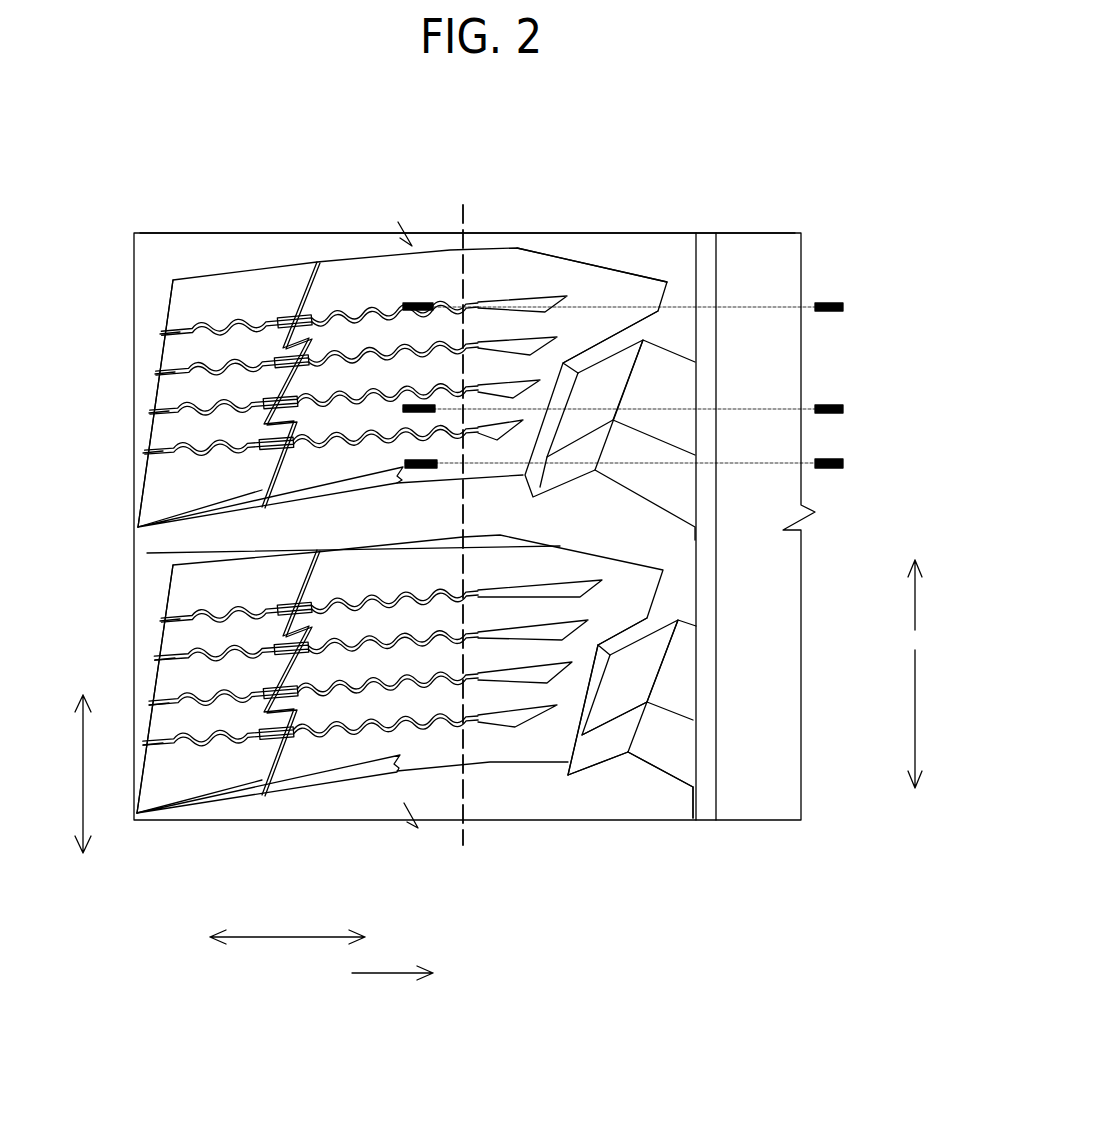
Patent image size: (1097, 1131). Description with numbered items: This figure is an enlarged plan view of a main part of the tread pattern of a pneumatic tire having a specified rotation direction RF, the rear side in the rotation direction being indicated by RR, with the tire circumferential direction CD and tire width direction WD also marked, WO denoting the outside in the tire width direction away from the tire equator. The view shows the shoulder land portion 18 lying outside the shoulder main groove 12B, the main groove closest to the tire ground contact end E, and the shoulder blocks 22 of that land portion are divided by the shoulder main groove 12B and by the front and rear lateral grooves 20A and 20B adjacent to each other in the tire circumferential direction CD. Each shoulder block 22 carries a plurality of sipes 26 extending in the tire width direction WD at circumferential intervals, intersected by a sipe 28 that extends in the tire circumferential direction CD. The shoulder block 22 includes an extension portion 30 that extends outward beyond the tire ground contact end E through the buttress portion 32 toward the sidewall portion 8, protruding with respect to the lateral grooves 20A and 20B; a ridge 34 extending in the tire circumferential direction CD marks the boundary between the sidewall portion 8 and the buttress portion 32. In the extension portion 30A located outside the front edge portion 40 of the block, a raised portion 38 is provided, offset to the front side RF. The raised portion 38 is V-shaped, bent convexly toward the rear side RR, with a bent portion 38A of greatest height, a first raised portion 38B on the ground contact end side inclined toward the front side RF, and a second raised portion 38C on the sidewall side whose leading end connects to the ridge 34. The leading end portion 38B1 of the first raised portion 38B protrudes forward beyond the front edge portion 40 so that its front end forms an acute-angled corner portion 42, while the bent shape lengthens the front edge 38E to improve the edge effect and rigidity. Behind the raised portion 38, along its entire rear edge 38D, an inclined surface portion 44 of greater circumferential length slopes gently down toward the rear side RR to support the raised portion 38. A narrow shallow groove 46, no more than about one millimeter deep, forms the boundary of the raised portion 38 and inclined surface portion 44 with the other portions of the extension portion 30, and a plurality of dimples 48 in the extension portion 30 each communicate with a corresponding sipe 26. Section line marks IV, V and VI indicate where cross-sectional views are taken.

The sidewall portion 8 is at (770, 785).
The shoulder main groove 12B is at (150, 372).
The shoulder land portion 18 is at (476, 146).
The lateral groove 20A is at (333, 248).
The lateral groove 20B is at (140, 572).
The shoulder block 22 is at (183, 307).
The sipes 26 is at (183, 310).
The sipe 28 is at (292, 300).
The extension portion 30 is at (527, 282).
The extension portion 30A is at (596, 471).
The buttress portion 32 is at (606, 217).
The ridge 34 is at (708, 247).
The raised portion 38 is at (657, 478).
The bent portion 38A is at (648, 720).
The first raised portion 38B is at (600, 748).
The leading end portion 38B1 is at (577, 420).
The second raised portion 38C is at (673, 745).
The rear edge 38D is at (663, 696).
The front edge 38E is at (628, 755).
The front edge portion 40 is at (395, 481).
The corner portion 42 is at (537, 497).
The inclined surface portion 44 is at (657, 398).
The shallow groove 46 is at (577, 370).
The dimples 48 is at (520, 300).
The tire ground contact end E is at (465, 218).
The section line IV is at (624, 465).
The section line V is at (624, 414).
The section line VI is at (618, 289).
The tire circumferential direction CD is at (67, 774).
The tire width direction WD is at (287, 950).
The outside in the tire width direction WO is at (392, 988).
The rear side in the rotation direction RR is at (932, 595).
The rotation direction RF is at (931, 719).